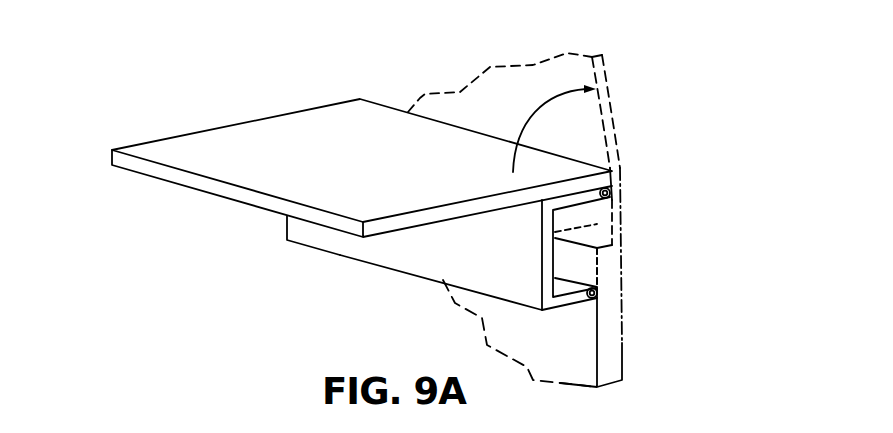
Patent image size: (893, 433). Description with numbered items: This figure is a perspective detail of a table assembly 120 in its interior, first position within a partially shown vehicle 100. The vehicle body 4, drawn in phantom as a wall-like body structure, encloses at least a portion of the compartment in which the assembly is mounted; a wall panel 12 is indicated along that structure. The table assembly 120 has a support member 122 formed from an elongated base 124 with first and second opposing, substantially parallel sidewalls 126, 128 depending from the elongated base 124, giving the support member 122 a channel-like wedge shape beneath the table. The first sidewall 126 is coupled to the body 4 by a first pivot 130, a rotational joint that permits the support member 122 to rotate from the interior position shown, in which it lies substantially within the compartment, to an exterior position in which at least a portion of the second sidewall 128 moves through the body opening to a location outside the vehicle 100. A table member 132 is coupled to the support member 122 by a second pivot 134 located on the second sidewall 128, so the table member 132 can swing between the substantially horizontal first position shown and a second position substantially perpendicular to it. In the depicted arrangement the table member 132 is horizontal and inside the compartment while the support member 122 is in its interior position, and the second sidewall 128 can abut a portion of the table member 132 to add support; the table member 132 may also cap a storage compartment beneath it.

The vehicle 100 is at (416, 87).
The table assembly 120 is at (237, 112).
The table member 132 is at (177, 155).
The elongated base 124 is at (508, 260).
The support member 122 is at (338, 238).
The second sidewall 128 is at (580, 202).
The first sidewall 126 is at (565, 297).
The second pivot 134 is at (610, 192).
The first pivot 130 is at (597, 290).
The wall panel 12 is at (583, 118).
The vehicle body 4 is at (568, 355).